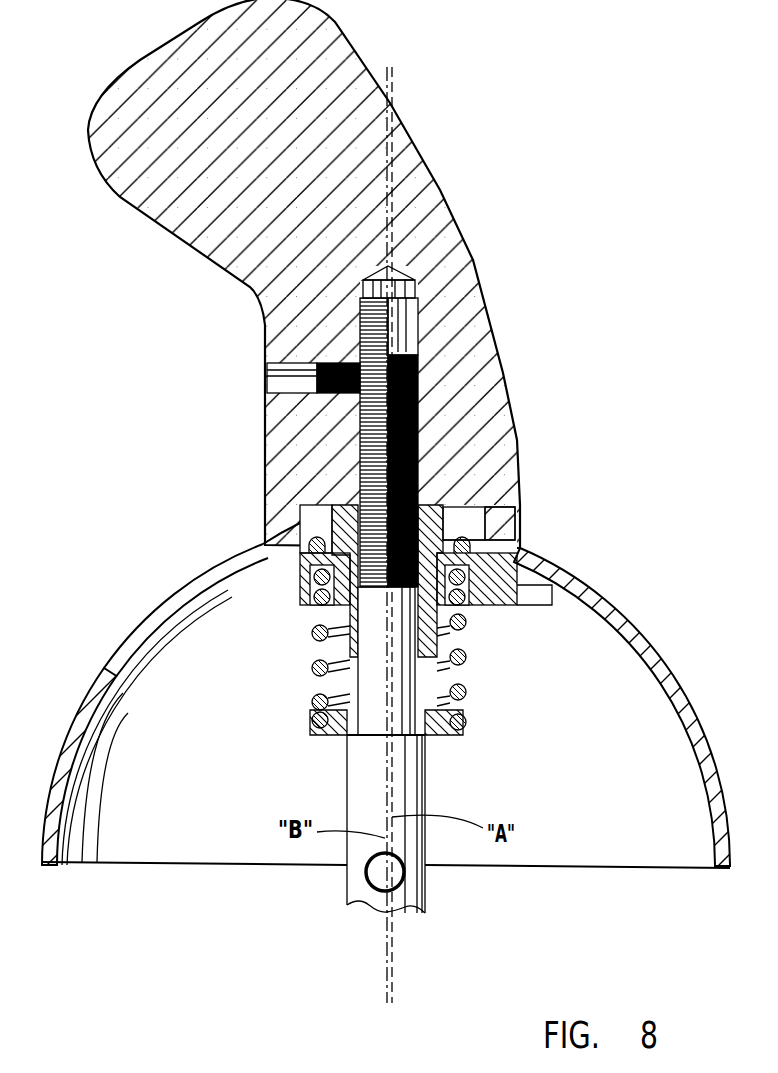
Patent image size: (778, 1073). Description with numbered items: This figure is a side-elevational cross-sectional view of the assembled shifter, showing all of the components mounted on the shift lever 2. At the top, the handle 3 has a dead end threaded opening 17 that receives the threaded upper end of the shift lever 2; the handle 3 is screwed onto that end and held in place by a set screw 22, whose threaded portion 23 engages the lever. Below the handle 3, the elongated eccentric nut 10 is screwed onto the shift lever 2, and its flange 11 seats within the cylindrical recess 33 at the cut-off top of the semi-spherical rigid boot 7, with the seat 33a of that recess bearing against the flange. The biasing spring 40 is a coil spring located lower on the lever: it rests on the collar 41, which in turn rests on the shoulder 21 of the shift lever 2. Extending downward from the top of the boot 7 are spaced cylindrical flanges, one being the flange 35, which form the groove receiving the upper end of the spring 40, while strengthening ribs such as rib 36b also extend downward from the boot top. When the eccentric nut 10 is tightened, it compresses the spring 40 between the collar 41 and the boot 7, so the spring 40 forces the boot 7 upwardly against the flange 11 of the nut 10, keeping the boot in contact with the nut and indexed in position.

The shift lever 2 is at (418, 443).
The handle 3 is at (458, 317).
The rigid boot 7 is at (654, 655).
The eccentric nut 10 is at (448, 503).
The flange 11 is at (495, 553).
The dead end threaded opening 17 is at (418, 383).
The shoulder 21 is at (352, 741).
The set screw 22 is at (318, 386).
The set screw threaded portion 23 is at (372, 398).
The cylindrical recess 33 is at (460, 537).
The seal seat 33a is at (227, 590).
The cylindrical flange 35 is at (547, 606).
The strengthening rib 36b is at (547, 592).
The biasing spring 40 is at (464, 700).
The collar 41 is at (442, 745).